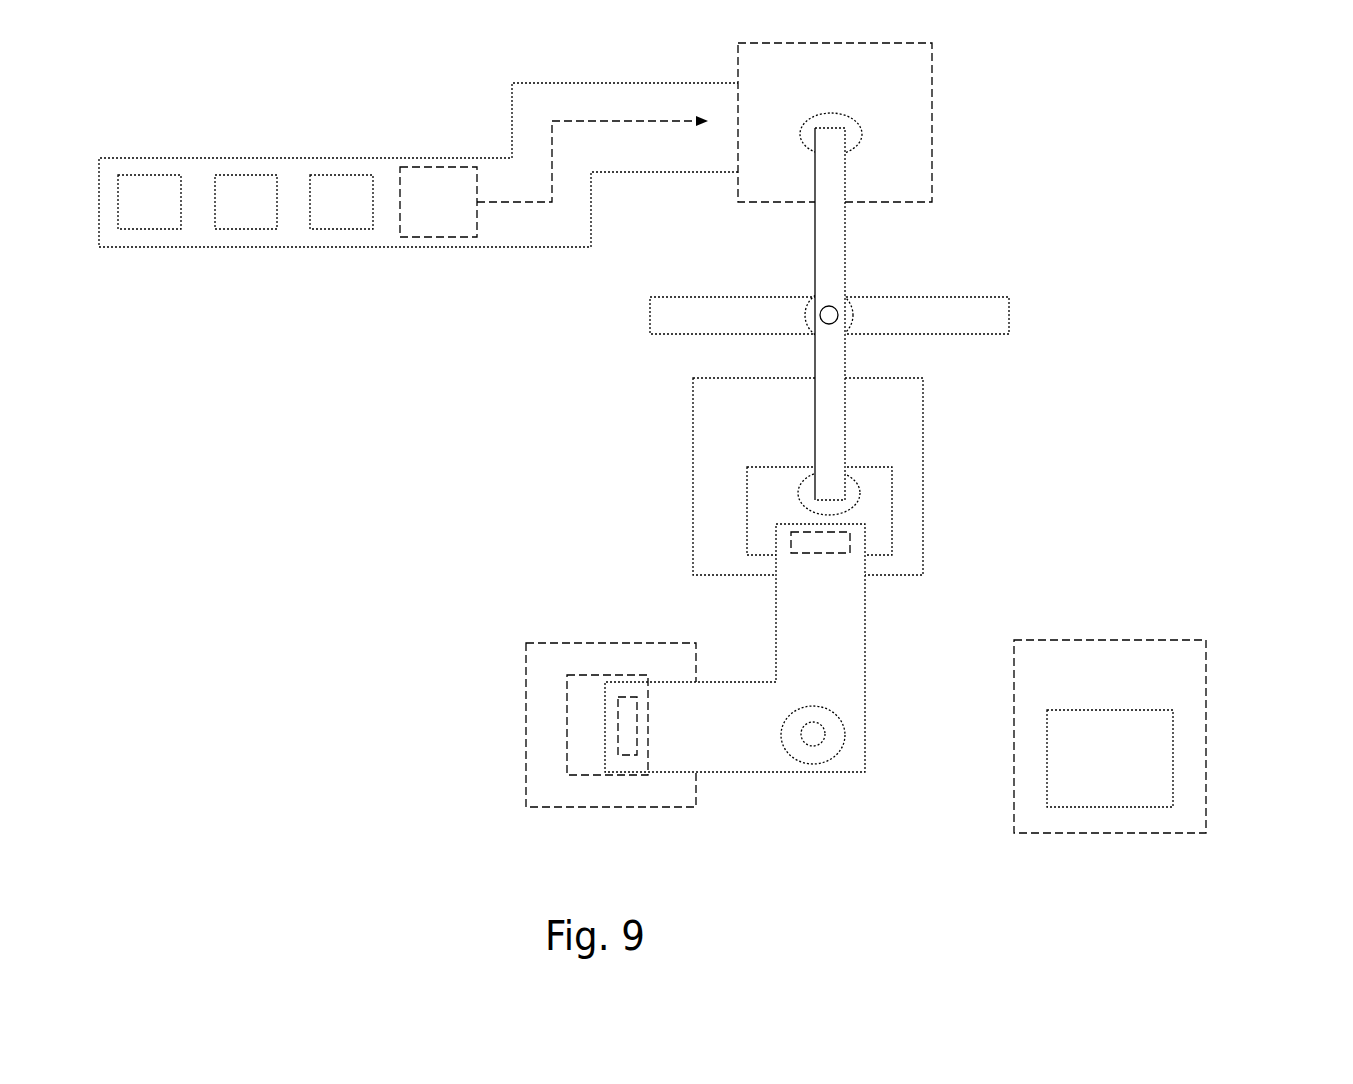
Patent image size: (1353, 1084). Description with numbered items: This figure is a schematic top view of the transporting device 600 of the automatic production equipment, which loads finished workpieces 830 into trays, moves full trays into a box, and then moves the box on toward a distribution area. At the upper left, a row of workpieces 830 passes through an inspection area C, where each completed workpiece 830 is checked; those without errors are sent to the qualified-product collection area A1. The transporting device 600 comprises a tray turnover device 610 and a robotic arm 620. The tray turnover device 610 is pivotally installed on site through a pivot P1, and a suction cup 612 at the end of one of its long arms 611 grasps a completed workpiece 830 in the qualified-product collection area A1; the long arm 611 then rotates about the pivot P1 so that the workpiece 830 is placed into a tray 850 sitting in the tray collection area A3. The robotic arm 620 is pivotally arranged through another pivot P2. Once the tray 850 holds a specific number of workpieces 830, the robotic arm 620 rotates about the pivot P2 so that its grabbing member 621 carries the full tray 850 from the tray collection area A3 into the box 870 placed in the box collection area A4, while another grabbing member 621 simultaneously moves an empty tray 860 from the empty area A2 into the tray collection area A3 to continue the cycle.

The workpiece 830 is at (152, 173).
The inspection area C is at (440, 168).
The qualified-product collection area A1 is at (932, 78).
The suction cup 612 is at (858, 136).
The long arm 611 is at (835, 232).
The pivot P1 is at (846, 336).
The tray turnover device 610 is at (902, 314).
The transporting device 600 is at (865, 471).
The tray collection area A3 is at (692, 438).
The tray 850 is at (753, 494).
The grabbing member 621 is at (800, 543).
The robotic arm 620 is at (832, 677).
The empty area A2 is at (526, 700).
The empty tray 860 is at (575, 765).
The pivot P2 is at (865, 695).
The box collection area A4 is at (1206, 697).
The box 870 is at (1162, 774).